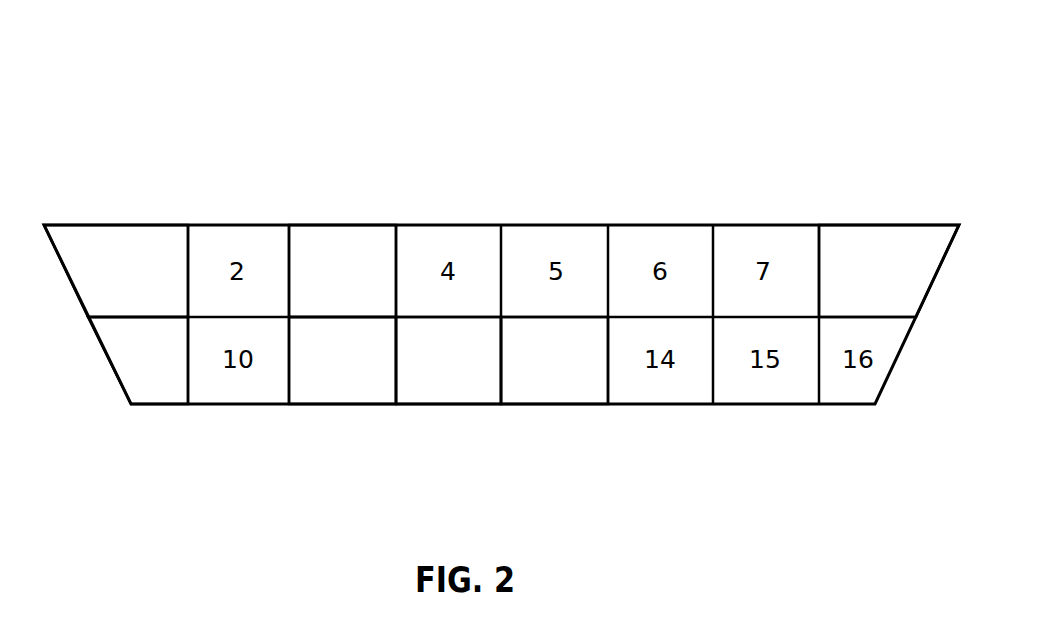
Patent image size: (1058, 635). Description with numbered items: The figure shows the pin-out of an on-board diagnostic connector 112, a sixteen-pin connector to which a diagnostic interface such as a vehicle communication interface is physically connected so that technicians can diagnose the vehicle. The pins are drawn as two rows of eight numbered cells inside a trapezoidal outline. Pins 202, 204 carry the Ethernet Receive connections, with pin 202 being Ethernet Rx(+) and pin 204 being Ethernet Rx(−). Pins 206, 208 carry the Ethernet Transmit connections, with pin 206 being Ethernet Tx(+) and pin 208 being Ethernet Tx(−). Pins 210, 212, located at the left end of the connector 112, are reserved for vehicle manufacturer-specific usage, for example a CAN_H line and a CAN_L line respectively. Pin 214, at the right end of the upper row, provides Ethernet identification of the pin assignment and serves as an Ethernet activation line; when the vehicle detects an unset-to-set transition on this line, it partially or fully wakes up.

The on-board diagnostic connector 112 is at (367, 70).
The pin 202 is at (348, 218).
The pin 204 is at (346, 410).
The pin 206 is at (447, 410).
The pin 208 is at (553, 408).
The pin 210 is at (130, 218).
The pin 212 is at (165, 408).
The pin 214 is at (857, 218).